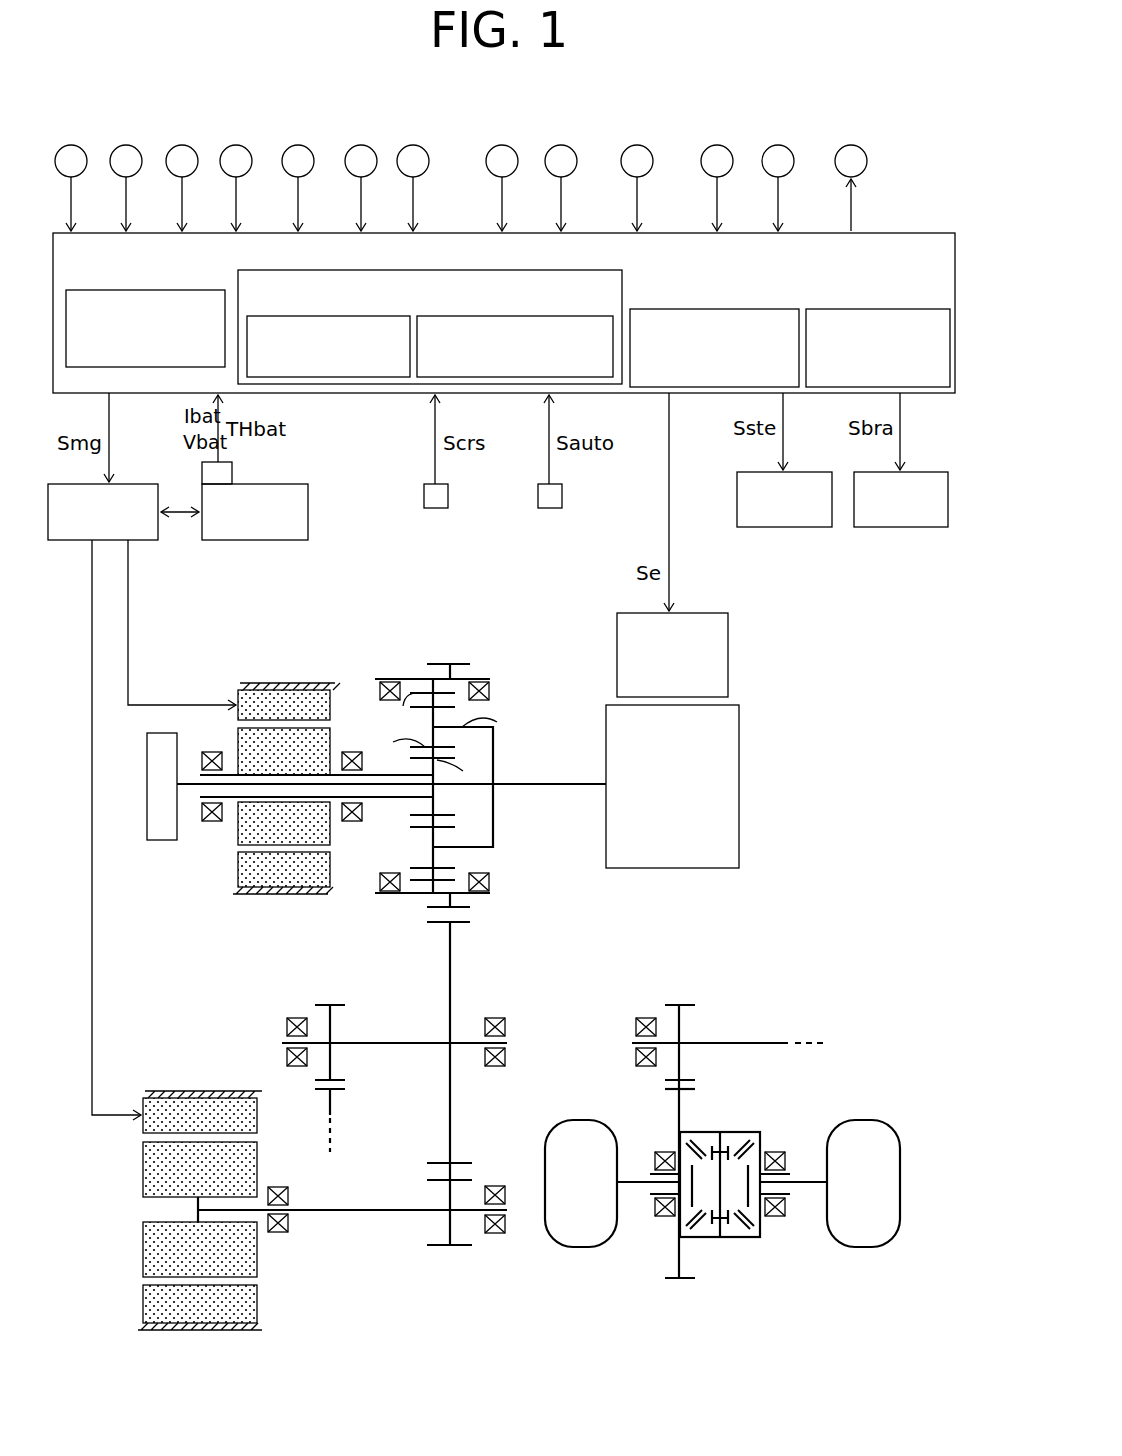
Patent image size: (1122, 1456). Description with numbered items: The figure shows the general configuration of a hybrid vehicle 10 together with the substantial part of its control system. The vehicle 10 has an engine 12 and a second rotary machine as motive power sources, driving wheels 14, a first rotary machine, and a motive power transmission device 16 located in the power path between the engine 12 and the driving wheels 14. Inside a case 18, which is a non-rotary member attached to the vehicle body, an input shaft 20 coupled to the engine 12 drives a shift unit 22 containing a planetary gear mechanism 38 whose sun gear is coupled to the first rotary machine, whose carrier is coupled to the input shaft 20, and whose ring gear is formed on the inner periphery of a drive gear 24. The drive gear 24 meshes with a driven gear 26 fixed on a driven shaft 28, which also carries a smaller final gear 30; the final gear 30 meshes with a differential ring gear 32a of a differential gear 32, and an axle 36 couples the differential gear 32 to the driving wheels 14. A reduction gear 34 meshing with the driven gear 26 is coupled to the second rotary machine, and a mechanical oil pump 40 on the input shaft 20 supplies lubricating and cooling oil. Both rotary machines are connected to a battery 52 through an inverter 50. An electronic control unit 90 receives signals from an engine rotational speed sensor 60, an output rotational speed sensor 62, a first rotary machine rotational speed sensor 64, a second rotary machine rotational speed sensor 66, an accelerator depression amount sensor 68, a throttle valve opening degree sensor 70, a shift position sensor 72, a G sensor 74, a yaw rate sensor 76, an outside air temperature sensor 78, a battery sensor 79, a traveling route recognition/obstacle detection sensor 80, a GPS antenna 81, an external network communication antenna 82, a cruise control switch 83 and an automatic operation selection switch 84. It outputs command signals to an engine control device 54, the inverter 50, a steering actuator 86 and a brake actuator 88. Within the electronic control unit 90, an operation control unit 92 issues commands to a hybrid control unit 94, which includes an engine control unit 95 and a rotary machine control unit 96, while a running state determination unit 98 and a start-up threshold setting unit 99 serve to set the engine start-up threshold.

The vehicle 10 is at (878, 104).
The engine 12 is at (658, 857).
The driving wheels 14 is at (580, 1238).
The motive power transmission device 16 is at (438, 1330).
The case 18 is at (270, 977).
The input shaft 20 is at (527, 792).
The shift unit 22 is at (419, 749).
The drive gear 24 is at (462, 914).
The driven gear 26 is at (460, 931).
The driven shaft 28 is at (373, 1041).
The final gear 30 is at (339, 1080).
The differential gear 32 is at (730, 1268).
The differential ring gear 32a is at (337, 1091).
The reduction gear 34 is at (437, 1244).
The axle 36 is at (640, 1191).
The planetary gear mechanism 38 is at (417, 670).
The mechanical oil pump 40 is at (158, 826).
The inverter 50 is at (140, 542).
The battery 52 is at (225, 542).
The engine control device 54 is at (717, 615).
The engine rotational speed sensor 60 is at (74, 168).
The output rotational speed sensor 62 is at (129, 168).
The MG1 rotational speed sensor 64 is at (185, 168).
The MG2 rotational speed sensor 66 is at (239, 168).
The accelerator depression amount sensor 68 is at (301, 168).
The throttle valve opening degree sensor 70 is at (364, 168).
The shift position sensor 72 is at (416, 168).
The G sensor 74 is at (505, 168).
The yaw rate sensor 76 is at (564, 168).
The outside air temperature sensor 78 is at (640, 168).
The battery sensor 79 is at (222, 477).
The traveling route recognition/obstacle detection sensor 80 is at (720, 168).
The GPS antenna 81 is at (781, 168).
The external network communication antenna 82 is at (854, 168).
The cruise control switch 83 is at (436, 509).
The automatic operation selection switch 84 is at (550, 509).
The steering actuator 86 is at (770, 516).
The brake actuator 88 is at (887, 516).
The electronic control unit 90 is at (898, 246).
The operation control unit 92 is at (172, 292).
The hybrid control unit 94 is at (569, 279).
The engine control unit 95 is at (264, 319).
The rotary machine control unit 96 is at (558, 319).
The running state determination unit 98 is at (741, 312).
The start-up threshold setting unit 99 is at (891, 312).